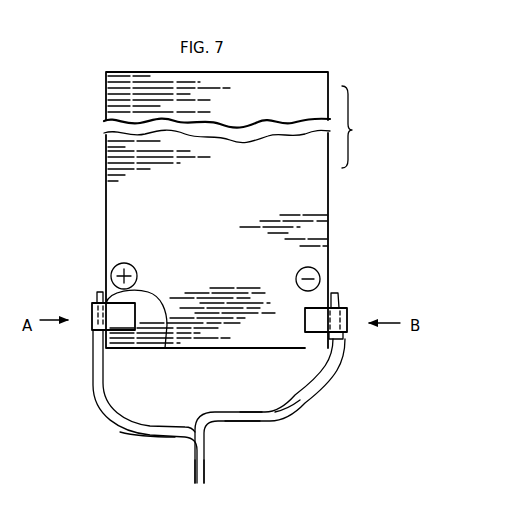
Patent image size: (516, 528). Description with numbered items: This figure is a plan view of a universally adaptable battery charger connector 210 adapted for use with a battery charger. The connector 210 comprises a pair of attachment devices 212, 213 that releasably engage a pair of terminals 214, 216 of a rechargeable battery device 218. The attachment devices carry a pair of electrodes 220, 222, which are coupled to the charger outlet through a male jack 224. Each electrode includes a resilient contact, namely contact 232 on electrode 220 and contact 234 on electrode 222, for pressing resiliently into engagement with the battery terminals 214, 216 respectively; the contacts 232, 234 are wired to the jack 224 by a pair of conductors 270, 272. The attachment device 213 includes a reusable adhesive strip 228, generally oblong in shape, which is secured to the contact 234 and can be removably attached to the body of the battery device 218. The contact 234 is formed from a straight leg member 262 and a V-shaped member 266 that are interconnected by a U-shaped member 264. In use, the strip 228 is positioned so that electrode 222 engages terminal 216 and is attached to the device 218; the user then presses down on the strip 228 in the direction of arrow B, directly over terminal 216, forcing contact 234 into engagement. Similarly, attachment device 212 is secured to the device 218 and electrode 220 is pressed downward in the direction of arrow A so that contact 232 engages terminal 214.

The universally adaptable battery charger connector 210 is at (351, 79).
The rechargeable battery device 218 is at (330, 183).
The terminal 216 is at (330, 307).
The terminal 214 is at (165, 342).
The electrode 220 is at (86, 293).
The contact 232 is at (91, 310).
The attachment device 212 is at (79, 339).
The conductor 270 is at (150, 437).
The electrode 222 is at (339, 298).
The U-shaped member 264 is at (353, 282).
The straight leg member 262 is at (347, 306).
The contact 234 is at (361, 304).
The attachment device 213 is at (311, 364).
The reusable adhesive strip 228 is at (308, 316).
The V-shaped member 266 is at (265, 377).
The conductor 272 is at (218, 424).
The male jack 224 is at (233, 472).